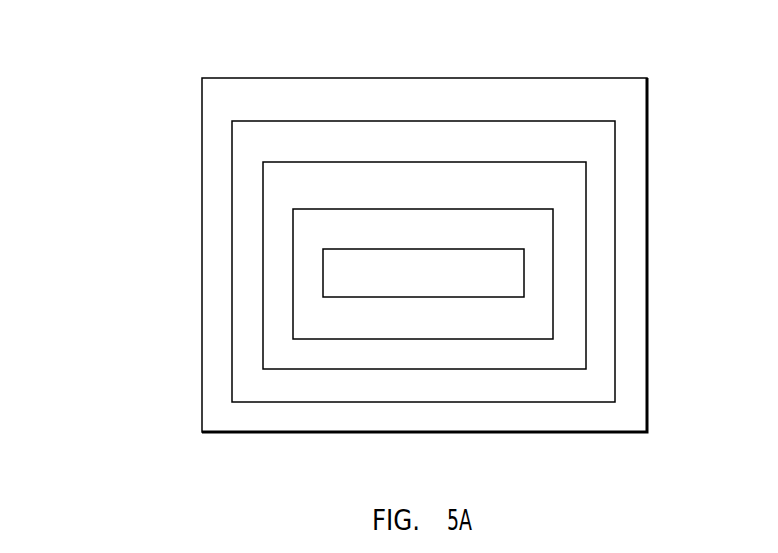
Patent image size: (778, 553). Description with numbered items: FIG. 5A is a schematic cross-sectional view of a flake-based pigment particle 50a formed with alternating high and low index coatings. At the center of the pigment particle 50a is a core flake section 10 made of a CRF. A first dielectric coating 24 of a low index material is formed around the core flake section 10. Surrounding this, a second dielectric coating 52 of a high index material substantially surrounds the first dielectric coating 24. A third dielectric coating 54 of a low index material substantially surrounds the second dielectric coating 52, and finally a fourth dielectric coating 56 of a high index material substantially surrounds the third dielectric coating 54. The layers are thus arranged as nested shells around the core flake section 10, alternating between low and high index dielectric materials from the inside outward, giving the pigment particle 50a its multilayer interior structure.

The fourth dielectric coating 56 is at (602, 78).
The third dielectric coating 54 is at (583, 146).
The second dielectric coating 52 is at (567, 203).
The first dielectric coating 24 is at (537, 235).
The core flake section 10 is at (513, 280).
The pigment particle 50a is at (154, 256).